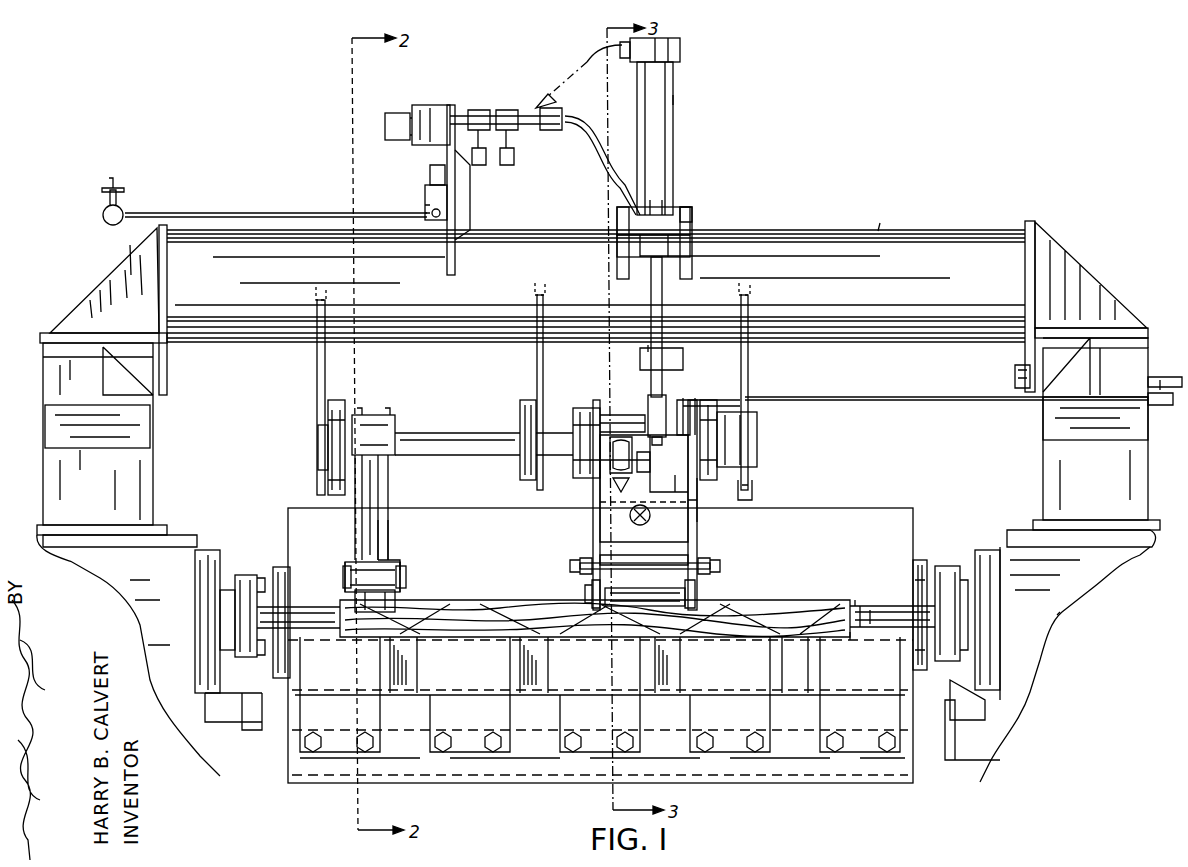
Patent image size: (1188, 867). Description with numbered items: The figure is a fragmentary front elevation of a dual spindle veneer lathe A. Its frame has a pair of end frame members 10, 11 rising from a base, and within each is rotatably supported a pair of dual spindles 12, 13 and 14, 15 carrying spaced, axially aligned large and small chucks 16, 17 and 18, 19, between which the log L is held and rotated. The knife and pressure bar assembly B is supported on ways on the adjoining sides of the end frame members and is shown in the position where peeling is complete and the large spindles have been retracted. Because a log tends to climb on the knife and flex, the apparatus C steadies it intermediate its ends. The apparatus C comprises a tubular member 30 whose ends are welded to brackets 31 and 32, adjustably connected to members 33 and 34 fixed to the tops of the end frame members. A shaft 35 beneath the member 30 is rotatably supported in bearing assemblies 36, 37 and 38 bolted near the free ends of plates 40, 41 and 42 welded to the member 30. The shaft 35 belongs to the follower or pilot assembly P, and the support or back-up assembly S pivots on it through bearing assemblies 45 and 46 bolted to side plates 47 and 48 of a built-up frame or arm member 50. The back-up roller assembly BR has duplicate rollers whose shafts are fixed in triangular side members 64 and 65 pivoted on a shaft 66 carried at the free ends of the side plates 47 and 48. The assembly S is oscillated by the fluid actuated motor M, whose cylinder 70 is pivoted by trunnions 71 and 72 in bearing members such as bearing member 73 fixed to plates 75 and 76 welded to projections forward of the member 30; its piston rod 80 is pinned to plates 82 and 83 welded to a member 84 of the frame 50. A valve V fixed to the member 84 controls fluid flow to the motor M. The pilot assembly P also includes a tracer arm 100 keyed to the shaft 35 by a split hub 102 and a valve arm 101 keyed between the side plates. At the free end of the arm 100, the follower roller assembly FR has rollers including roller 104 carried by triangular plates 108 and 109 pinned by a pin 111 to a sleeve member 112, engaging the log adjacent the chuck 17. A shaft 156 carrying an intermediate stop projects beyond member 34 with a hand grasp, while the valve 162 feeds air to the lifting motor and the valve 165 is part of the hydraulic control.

The end frame member 10 is at (40, 551).
The end frame member 11 is at (1120, 545).
The large outer spindle 12 is at (232, 577).
The small spindle 13 is at (286, 649).
The large outer spindle 14 is at (974, 568).
The small spindle 15 is at (900, 634).
The large chuck 16 is at (256, 574).
The small chuck 17 is at (328, 637).
The large chuck 18 is at (944, 566).
The small chuck 19 is at (852, 600).
The tubular member 30 is at (953, 338).
The bracket 31 is at (92, 293).
The bracket 32 is at (1096, 281).
The member 33 is at (45, 418).
The member 34 is at (1042, 466).
The shaft 35 is at (480, 428).
The bearing assembly 36 is at (344, 404).
The bearing assembly 37 is at (526, 400).
The bearing assembly 38 is at (748, 493).
The plate 40 is at (318, 388).
The plate 41 is at (536, 360).
The plate 42 is at (748, 363).
The bearing assembly 45 is at (574, 406).
The bearing assembly 46 is at (735, 388).
The side plate 47 is at (593, 520).
The side plate 48 is at (697, 545).
The frame or arm member 50 is at (586, 545).
The triangular side member 64 is at (586, 586).
The triangular side member 65 is at (696, 591).
The shaft 66 is at (652, 560).
The cylinder 70 is at (673, 132).
The trunnion 71 is at (616, 218).
The trunnion 72 is at (690, 210).
The bearing member 73 is at (616, 250).
The plate 75 is at (628, 207).
The plate 76 is at (688, 206).
The piston rod 80 is at (662, 292).
The plate 82 is at (648, 401).
The plate 83 is at (673, 402).
The member 84 is at (697, 496).
The tracer or follower arm member 100 is at (344, 530).
The valve lever or arm 101 is at (604, 394).
The split hub 102 is at (396, 415).
The follower roller 104 is at (396, 592).
The triangular plate 108 is at (346, 593).
The triangular plate 109 is at (404, 569).
The pin 111 is at (342, 570).
The sleeve member 112 is at (388, 558).
The shaft 156 is at (886, 398).
The valve 162 is at (425, 201).
The valve 165 is at (420, 109).
The dual spindle veneer lathe A is at (1057, 603).
The knife and pressure bar assembly B is at (860, 788).
The log support apparatus C is at (878, 221).
The log L is at (494, 572).
The fluid actuated motor M is at (674, 103).
The follower or pilot assembly P is at (402, 483).
The support or back-up assembly S is at (698, 528).
The valve V is at (600, 480).
The follower roller assembly FR is at (405, 559).
The back-up roller assembly BR is at (705, 582).